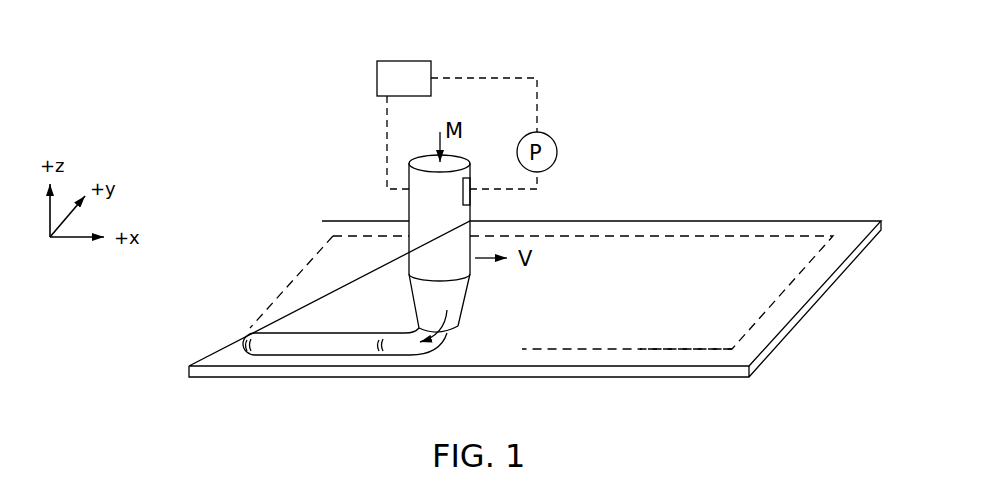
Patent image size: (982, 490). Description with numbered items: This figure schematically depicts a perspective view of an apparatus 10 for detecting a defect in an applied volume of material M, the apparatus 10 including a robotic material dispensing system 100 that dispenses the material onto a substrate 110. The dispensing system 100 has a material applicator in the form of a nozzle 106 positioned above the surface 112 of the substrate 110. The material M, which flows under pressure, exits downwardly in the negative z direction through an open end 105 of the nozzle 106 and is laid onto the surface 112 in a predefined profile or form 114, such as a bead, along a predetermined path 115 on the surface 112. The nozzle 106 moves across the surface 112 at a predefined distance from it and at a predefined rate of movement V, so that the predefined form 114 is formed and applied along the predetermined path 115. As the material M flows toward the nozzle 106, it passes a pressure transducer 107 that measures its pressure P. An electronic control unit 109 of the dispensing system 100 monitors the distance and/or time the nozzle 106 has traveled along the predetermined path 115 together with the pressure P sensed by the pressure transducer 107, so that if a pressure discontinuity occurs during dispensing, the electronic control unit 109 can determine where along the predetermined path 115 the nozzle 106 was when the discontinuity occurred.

The apparatus 10 is at (224, 82).
The robotic material dispensing system 100 is at (429, 224).
The open end 105 is at (447, 333).
The nozzle 106 is at (465, 303).
The pressure transducer 107 is at (470, 190).
The electronic control unit 109 is at (371, 54).
The substrate 110 is at (738, 213).
The surface 112 is at (307, 243).
The predefined form 114 is at (275, 332).
The predetermined path 115 is at (683, 358).